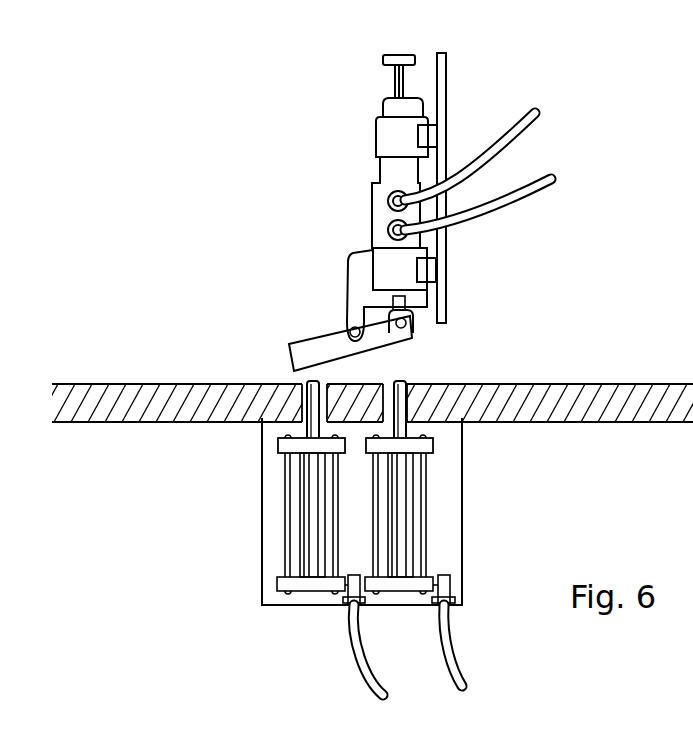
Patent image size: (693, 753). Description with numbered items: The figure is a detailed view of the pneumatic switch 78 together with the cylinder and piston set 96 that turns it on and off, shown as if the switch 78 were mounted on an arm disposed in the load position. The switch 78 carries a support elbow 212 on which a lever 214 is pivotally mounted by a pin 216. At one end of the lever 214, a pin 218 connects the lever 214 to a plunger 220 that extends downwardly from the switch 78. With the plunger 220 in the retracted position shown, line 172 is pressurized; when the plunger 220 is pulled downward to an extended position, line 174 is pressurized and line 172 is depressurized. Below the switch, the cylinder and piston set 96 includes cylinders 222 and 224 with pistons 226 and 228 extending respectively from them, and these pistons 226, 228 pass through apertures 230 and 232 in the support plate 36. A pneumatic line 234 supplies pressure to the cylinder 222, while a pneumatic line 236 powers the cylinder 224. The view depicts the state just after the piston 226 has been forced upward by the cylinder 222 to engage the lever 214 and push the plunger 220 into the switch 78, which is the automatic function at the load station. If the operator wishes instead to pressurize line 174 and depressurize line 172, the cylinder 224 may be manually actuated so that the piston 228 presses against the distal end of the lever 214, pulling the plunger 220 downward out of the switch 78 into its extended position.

The support plate 36 is at (176, 384).
The pneumatic switch 78 is at (374, 159).
The cylinder and piston set 96 is at (463, 480).
The line 172 is at (524, 138).
The line 174 is at (516, 203).
The support elbow 212 is at (350, 270).
The lever 214 is at (300, 351).
The pin 216 is at (349, 328).
The pin 218 is at (414, 326).
The plunger 220 is at (405, 302).
The cylinder 222 is at (409, 497).
The cylinder 224 is at (315, 480).
The piston 226 is at (463, 431).
The piston 228 is at (270, 432).
The aperture 230 is at (408, 385).
The aperture 232 is at (303, 385).
The pneumatic line 234 is at (454, 653).
The pneumatic line 236 is at (376, 670).